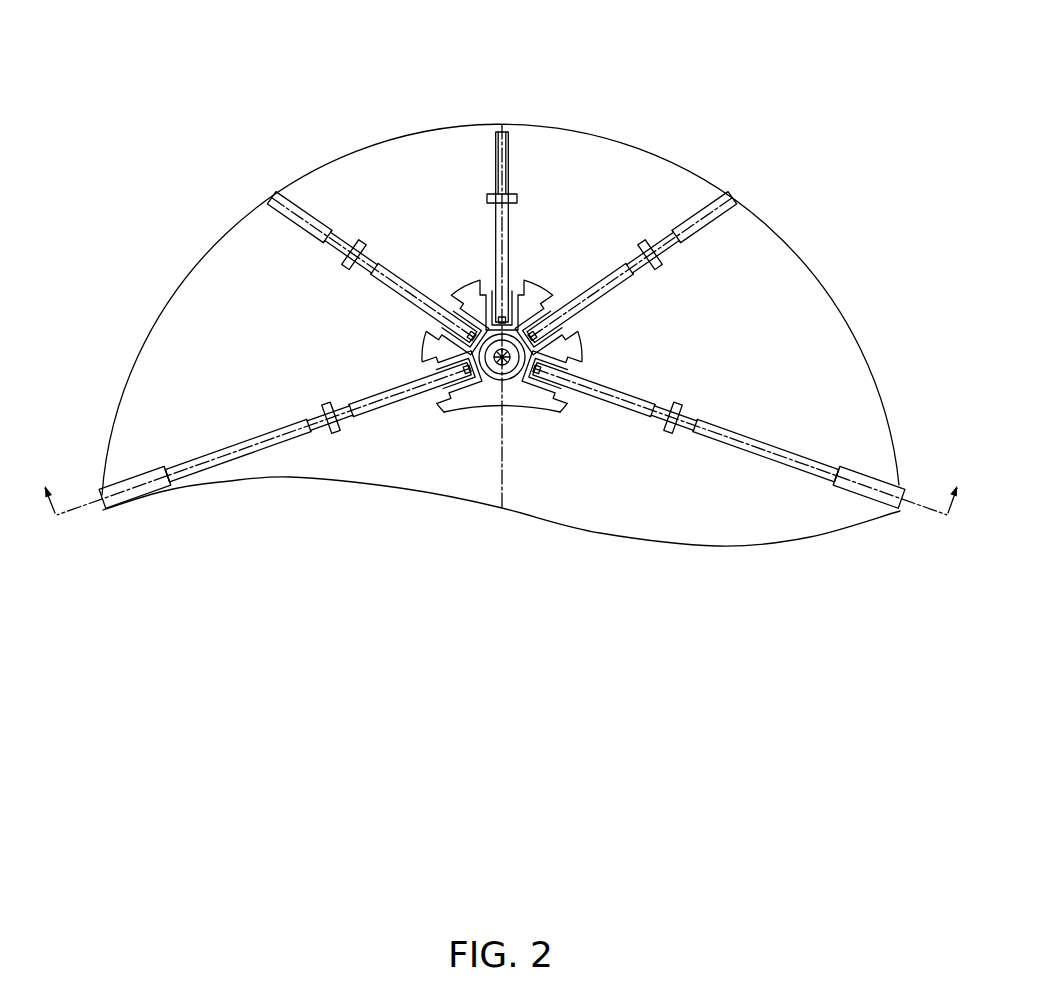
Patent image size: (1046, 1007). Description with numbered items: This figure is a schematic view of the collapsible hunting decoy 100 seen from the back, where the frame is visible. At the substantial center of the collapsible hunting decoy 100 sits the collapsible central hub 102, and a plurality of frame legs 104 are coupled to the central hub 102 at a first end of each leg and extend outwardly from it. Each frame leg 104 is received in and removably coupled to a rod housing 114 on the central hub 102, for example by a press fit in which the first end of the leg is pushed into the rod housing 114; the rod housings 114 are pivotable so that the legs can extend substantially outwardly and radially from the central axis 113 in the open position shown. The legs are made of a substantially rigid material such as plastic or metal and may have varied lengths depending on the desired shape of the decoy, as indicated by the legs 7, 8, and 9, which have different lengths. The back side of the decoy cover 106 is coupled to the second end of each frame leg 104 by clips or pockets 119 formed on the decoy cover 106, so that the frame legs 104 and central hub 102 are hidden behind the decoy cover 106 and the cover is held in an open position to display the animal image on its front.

The collapsible hunting decoy 100 is at (176, 44).
The collapsible central hub 102 is at (518, 332).
The frame legs 104 is at (248, 453).
The decoy cover 106 is at (873, 370).
The central axis 113 is at (505, 365).
The rod housing 114 is at (627, 284).
The pockets 119 is at (873, 488).
The leg 7 is at (198, 468).
The leg 8 is at (340, 237).
The leg 9 is at (495, 153).